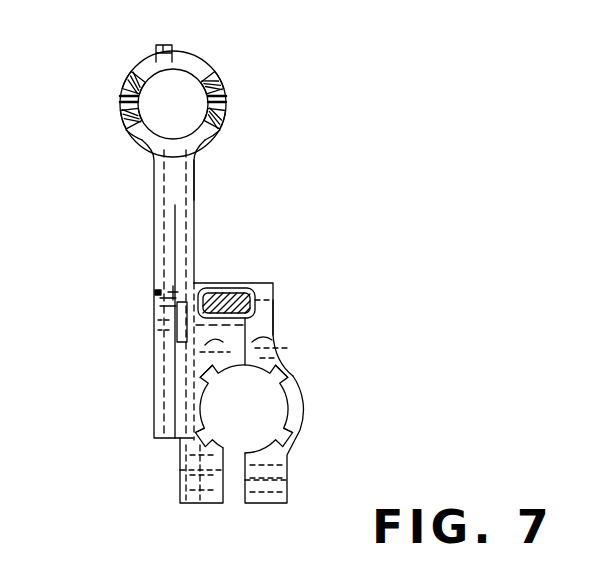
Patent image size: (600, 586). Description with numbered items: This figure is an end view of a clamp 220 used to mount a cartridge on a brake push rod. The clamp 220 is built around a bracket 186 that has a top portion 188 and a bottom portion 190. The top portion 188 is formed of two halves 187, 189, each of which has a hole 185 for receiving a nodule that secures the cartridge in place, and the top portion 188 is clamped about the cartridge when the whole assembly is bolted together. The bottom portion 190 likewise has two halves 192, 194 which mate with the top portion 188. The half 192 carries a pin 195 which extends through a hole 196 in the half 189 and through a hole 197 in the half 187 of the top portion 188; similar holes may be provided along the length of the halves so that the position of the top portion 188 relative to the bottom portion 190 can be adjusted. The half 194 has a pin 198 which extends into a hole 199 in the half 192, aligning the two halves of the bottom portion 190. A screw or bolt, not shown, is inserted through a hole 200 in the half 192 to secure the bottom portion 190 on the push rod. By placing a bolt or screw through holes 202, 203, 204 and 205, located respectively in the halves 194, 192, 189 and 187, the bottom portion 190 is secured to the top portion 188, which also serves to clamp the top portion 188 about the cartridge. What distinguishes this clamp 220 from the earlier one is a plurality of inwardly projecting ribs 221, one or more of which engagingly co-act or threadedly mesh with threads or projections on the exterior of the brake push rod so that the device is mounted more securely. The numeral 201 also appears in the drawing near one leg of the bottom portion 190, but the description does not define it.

The clamp 220 is at (232, 74).
The hole 185 is at (120, 98).
The half 187 is at (138, 137).
The half 189 is at (222, 122).
The top portion 188 is at (195, 172).
The bracket 186 is at (196, 283).
The half 192 is at (227, 283).
The hole 199 is at (233, 311).
The half 194 is at (267, 310).
The pin 198 is at (246, 323).
The hole 202 is at (273, 338).
The hole 197 is at (158, 292).
The pin 195 is at (160, 302).
The hole 196 is at (173, 303).
The hole 205 is at (173, 321).
The hole 204 is at (176, 333).
The hole 203 is at (222, 345).
The bottom portion 190 is at (308, 402).
The inwardly projecting ribs 221 is at (268, 396).
The left clamp leg 201 is at (203, 477).
The hole 200 is at (290, 466).